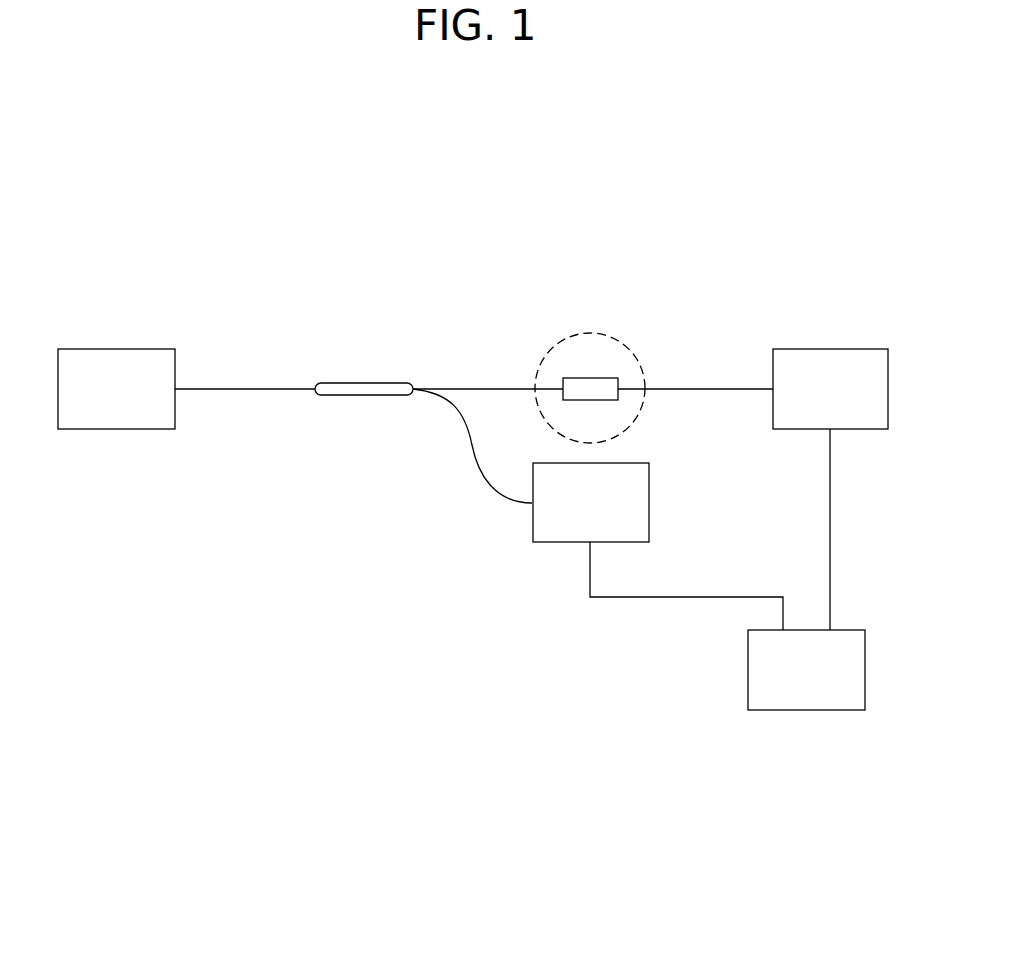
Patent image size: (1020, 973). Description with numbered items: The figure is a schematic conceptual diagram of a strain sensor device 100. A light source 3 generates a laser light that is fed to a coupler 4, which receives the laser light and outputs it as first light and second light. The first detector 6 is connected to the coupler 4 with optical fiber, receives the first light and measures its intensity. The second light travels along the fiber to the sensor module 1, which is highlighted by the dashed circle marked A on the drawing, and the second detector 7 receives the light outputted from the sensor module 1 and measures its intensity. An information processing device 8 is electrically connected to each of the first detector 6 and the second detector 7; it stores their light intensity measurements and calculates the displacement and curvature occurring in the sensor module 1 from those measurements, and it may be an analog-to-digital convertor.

The strain sensor device 100 is at (220, 184).
The light source 3 is at (116, 349).
The coupler 4 is at (363, 383).
The sensor module 1 is at (572, 378).
The enlarged region A is at (640, 330).
The second detector 7 is at (830, 349).
The first detector 6 is at (533, 530).
The information processing device 8 is at (818, 710).